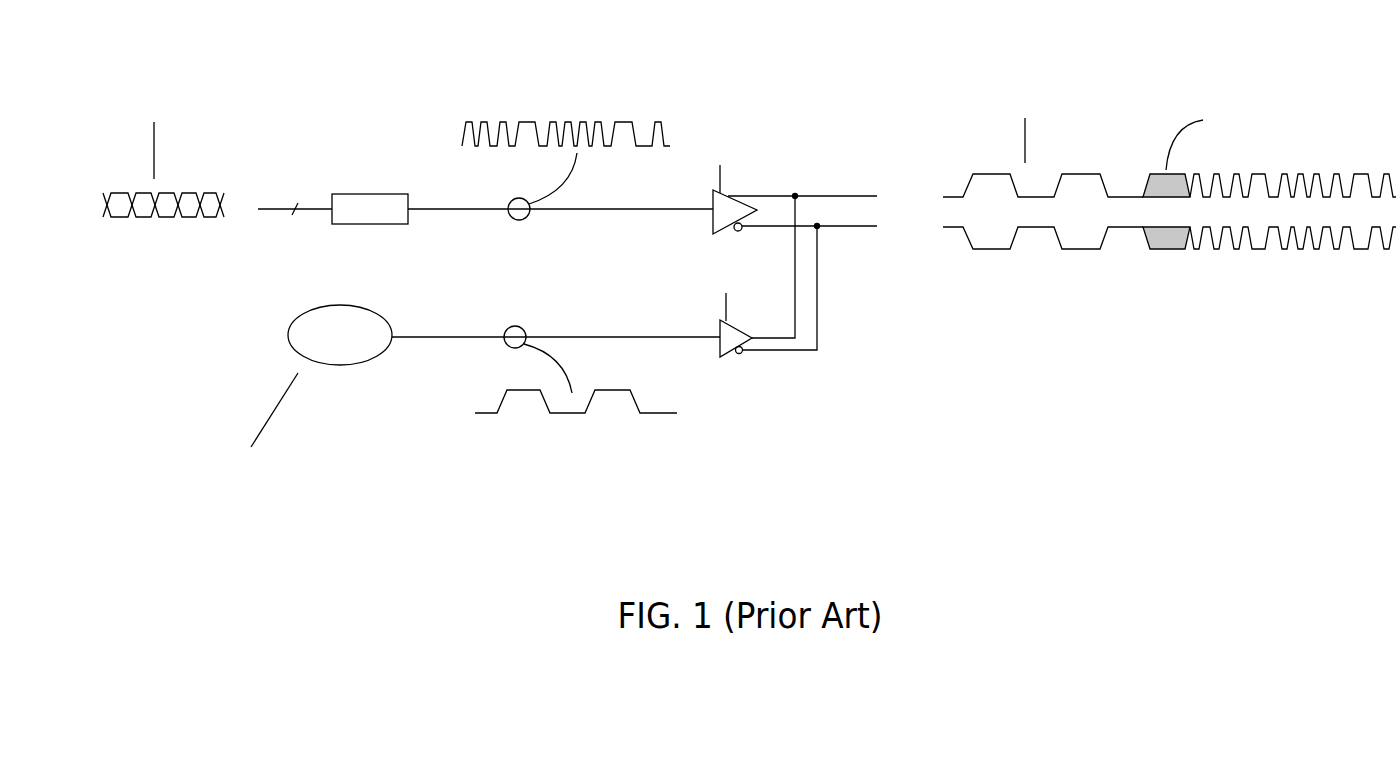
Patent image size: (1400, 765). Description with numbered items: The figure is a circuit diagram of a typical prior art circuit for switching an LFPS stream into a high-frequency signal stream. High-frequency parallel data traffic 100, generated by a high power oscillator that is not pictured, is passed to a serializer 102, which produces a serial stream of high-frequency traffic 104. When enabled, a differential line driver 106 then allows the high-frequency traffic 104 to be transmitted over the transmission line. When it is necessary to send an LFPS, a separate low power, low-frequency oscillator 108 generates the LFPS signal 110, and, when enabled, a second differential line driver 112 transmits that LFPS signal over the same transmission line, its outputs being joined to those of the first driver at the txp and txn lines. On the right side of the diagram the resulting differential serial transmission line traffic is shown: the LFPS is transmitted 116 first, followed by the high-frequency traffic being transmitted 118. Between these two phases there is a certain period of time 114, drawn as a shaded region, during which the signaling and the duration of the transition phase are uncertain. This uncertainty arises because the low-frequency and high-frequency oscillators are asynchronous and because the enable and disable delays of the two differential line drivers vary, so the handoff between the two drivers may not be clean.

The high-frequency parallel data traffic 100 is at (163, 143).
The serializer 102 is at (485, 175).
The serial stream of high-frequency traffic 104 is at (566, 132).
The differential line driver 106 is at (804, 177).
The low power, low-frequency oscillator 108 is at (460, 387).
The LFPS signal 110 is at (576, 414).
The differential line driver 112 is at (758, 314).
The period of time 114 is at (1169, 207).
The LFPS transmitted 116 is at (1043, 173).
The high-frequency traffic transmitted 118 is at (1293, 254).